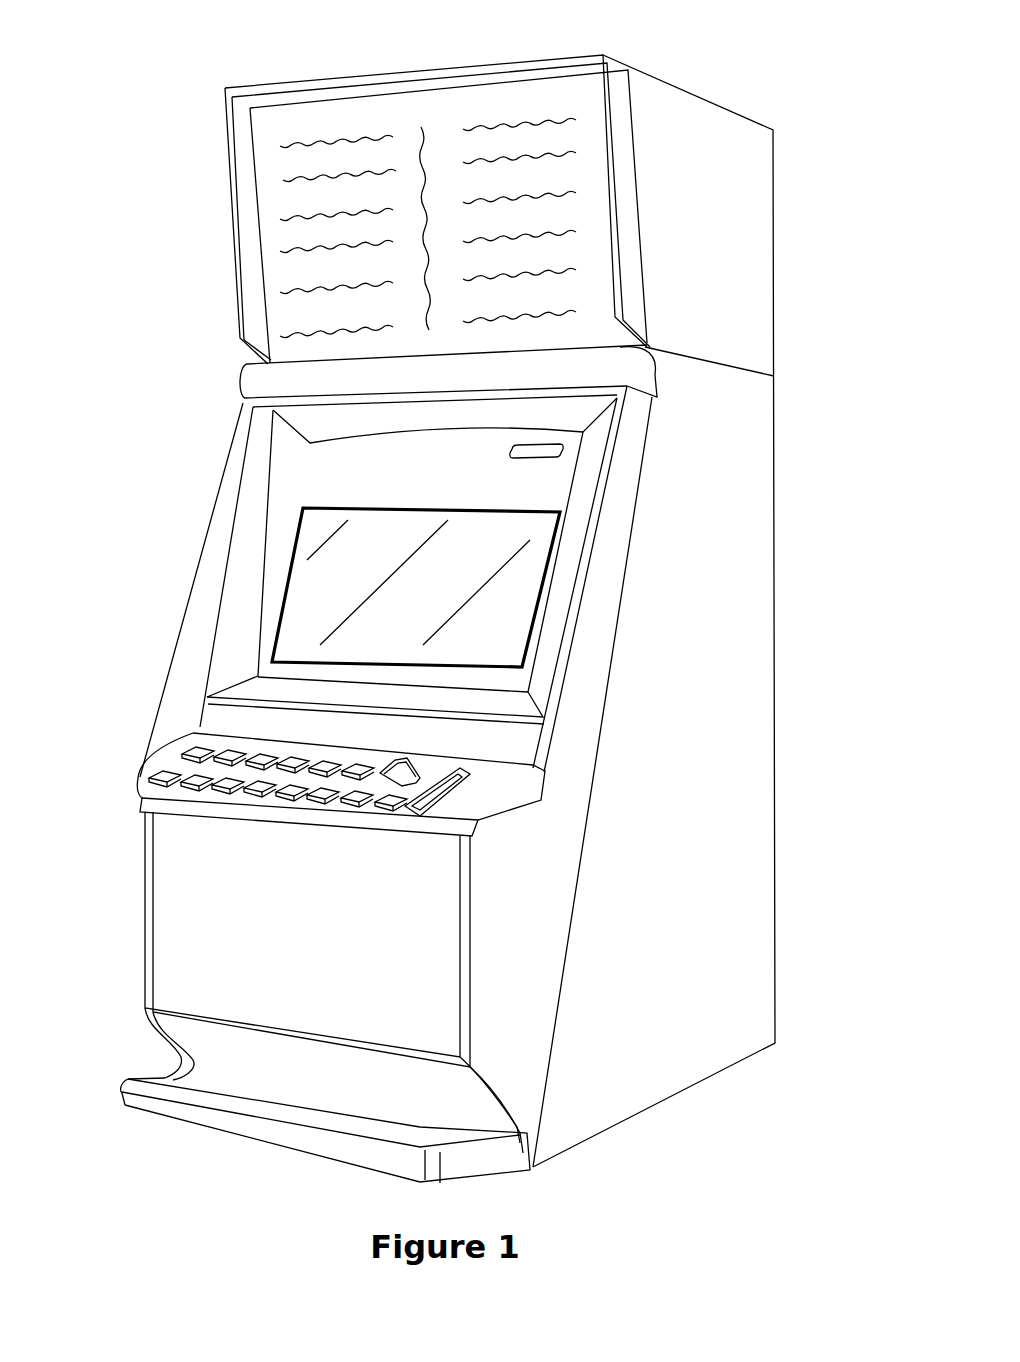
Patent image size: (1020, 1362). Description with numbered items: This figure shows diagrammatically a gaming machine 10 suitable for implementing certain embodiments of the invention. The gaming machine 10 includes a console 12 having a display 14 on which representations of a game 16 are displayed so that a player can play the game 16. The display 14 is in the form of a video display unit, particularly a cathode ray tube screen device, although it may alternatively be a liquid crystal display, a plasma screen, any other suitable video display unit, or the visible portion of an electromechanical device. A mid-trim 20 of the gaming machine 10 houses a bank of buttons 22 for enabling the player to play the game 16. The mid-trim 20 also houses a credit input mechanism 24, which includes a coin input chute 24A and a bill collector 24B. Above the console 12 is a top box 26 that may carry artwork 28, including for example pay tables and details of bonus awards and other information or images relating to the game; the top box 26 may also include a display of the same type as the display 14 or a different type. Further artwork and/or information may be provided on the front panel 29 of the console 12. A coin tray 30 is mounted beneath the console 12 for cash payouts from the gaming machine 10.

The gaming machine 10 is at (776, 99).
The console 12 is at (730, 494).
The display 14 is at (250, 619).
The game 16 is at (292, 539).
The mid-trim 20 is at (150, 804).
The bank of buttons 22 is at (200, 796).
The credit input mechanism 24 is at (507, 758).
The coin input chute 24A is at (403, 764).
The bill collector 24B is at (438, 812).
The top box 26 is at (232, 303).
The artwork 28 is at (306, 216).
The front panel 29 is at (202, 918).
The coin tray 30 is at (123, 1100).